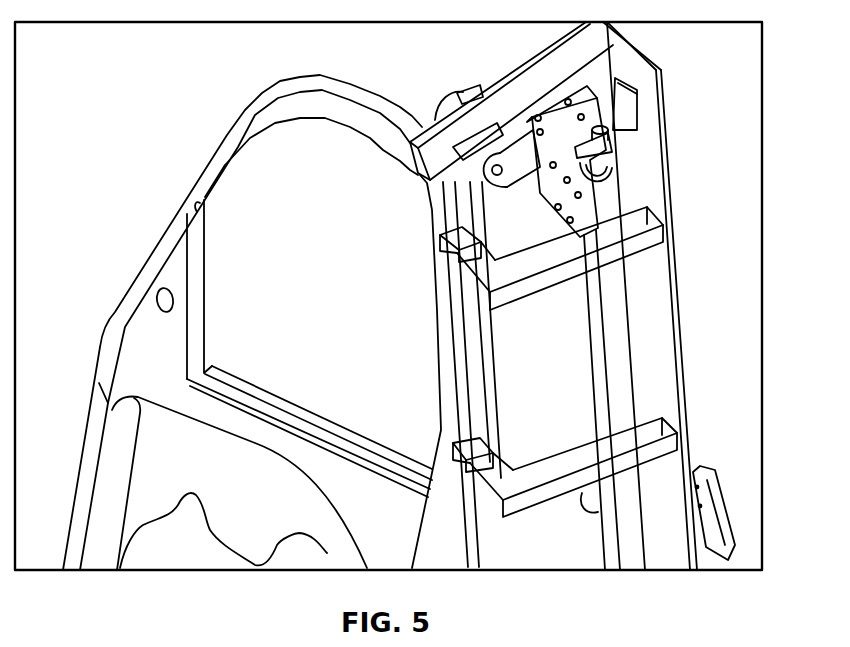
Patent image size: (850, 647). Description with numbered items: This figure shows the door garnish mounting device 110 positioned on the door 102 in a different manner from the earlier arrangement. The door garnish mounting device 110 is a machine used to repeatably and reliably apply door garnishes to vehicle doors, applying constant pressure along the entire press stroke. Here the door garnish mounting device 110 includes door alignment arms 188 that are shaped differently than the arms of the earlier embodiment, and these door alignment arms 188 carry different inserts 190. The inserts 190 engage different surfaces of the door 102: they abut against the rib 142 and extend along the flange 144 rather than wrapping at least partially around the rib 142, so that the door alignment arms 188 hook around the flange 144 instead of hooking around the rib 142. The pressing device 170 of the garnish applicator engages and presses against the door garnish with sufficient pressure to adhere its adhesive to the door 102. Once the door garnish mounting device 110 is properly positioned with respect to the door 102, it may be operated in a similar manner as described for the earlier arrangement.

The door 102 is at (197, 182).
The door garnish mounting device 110 is at (677, 197).
The rib 142 is at (470, 363).
The flange 144 is at (487, 357).
The pressing device 170 is at (447, 102).
The door alignment arms 188 is at (517, 100).
The inserts 190 is at (457, 244).